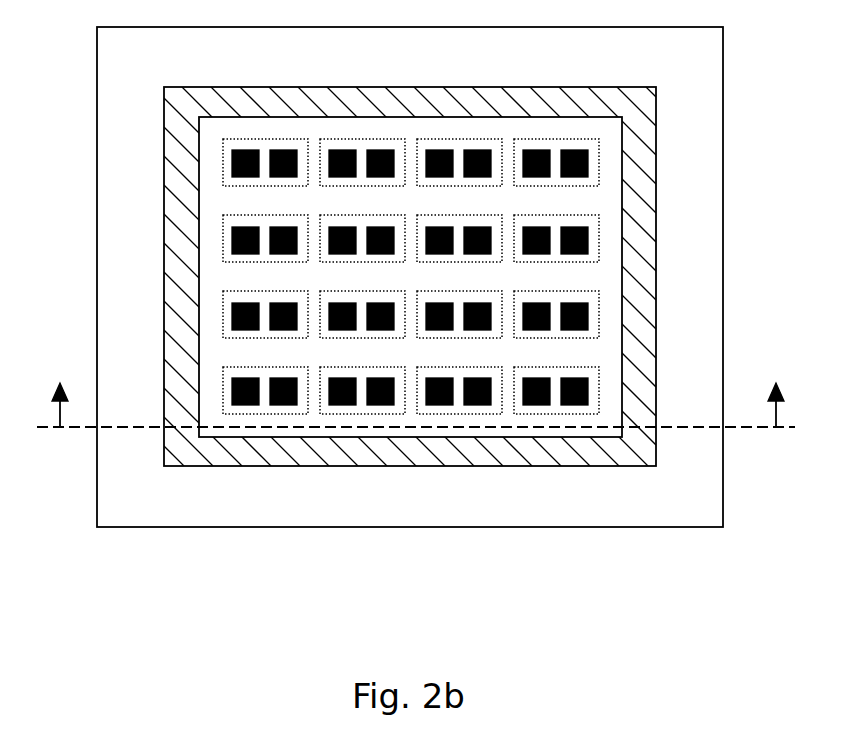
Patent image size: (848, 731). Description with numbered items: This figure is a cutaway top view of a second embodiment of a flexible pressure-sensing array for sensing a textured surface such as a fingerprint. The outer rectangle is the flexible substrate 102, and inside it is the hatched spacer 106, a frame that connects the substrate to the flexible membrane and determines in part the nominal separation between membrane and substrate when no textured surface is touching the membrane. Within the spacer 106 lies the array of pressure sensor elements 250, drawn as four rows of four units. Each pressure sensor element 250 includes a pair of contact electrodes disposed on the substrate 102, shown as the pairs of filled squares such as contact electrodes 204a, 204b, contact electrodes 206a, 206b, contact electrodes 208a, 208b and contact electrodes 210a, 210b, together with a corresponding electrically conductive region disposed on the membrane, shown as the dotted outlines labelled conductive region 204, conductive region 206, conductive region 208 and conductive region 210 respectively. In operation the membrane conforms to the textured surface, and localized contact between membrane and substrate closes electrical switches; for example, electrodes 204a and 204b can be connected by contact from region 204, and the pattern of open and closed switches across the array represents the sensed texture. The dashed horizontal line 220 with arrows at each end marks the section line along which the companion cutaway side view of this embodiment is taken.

The flexible substrate 102 is at (123, 113).
The spacer 106 is at (177, 183).
The electrically conductive region 204 is at (178, 386).
The contact electrode 204a is at (250, 404).
The contact electrode 204b is at (288, 404).
The electrically conductive region 206 is at (224, 386).
The contact electrode 206a is at (345, 404).
The contact electrode 206b is at (382, 404).
The electrically conductive region 208 is at (608, 386).
The contact electrode 208a is at (440, 404).
The contact electrode 208b is at (482, 404).
The electrically conductive region 210 is at (653, 386).
The contact electrode 210a is at (540, 404).
The contact electrode 210b is at (580, 404).
The line 220 is at (738, 427).
The pressure sensor elements 250 is at (622, 117).